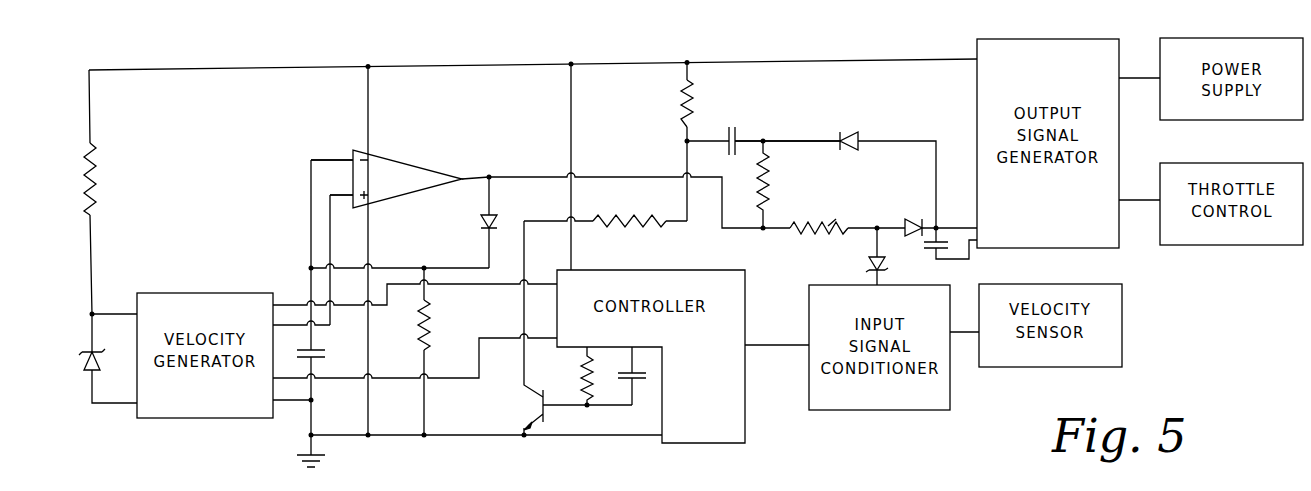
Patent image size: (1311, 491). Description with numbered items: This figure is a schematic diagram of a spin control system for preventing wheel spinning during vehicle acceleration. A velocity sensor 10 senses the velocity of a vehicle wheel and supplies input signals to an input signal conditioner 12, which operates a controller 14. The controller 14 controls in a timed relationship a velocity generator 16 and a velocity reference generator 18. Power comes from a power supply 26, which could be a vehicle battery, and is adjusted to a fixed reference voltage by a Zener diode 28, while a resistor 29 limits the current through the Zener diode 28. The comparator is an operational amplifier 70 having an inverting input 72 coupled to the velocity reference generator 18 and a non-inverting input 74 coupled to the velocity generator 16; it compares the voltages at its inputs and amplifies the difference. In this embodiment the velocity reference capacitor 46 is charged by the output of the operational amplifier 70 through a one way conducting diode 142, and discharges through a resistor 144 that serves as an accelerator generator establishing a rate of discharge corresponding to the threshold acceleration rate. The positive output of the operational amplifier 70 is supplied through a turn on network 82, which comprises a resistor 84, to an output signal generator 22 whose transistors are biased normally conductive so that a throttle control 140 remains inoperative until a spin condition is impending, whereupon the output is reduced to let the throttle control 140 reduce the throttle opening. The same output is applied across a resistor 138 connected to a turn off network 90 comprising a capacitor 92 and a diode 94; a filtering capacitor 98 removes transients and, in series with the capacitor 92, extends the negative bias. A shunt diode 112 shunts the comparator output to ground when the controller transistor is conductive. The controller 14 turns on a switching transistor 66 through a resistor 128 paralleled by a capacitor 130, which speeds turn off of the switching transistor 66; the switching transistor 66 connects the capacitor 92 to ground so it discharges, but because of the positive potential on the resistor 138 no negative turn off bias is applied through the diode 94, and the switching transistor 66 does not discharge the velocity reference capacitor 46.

The velocity sensor 10 is at (1121, 357).
The input signal conditioner 12 is at (875, 413).
The controller 14 is at (712, 446).
The velocity generator 16 is at (236, 421).
The velocity reference generator 18 is at (338, 440).
The output signal generator 22 is at (975, 46).
The power supply 26 is at (1208, 122).
The Zener diode 28 is at (89, 374).
The resistor 29 is at (102, 188).
The velocity reference capacitor 46 is at (310, 349).
The switching transistor 66 is at (540, 405).
The operational amplifier 70 is at (410, 170).
The inverting input 72 is at (327, 159).
The non-inverting input 74 is at (352, 195).
The turn on network 82 is at (858, 234).
The resistor 84 is at (830, 224).
The turn off network 90 is at (793, 139).
The capacitor 92 is at (737, 135).
The diode 94 is at (860, 132).
The filtering capacitor 98 is at (933, 249).
The shunt diode 112 is at (870, 261).
The resistor 128 is at (580, 383).
The capacitor 130 is at (643, 381).
The resistor 138 is at (771, 185).
The throttle control 140 is at (1215, 247).
The diode 142 is at (494, 224).
The resistor 144 is at (430, 338).